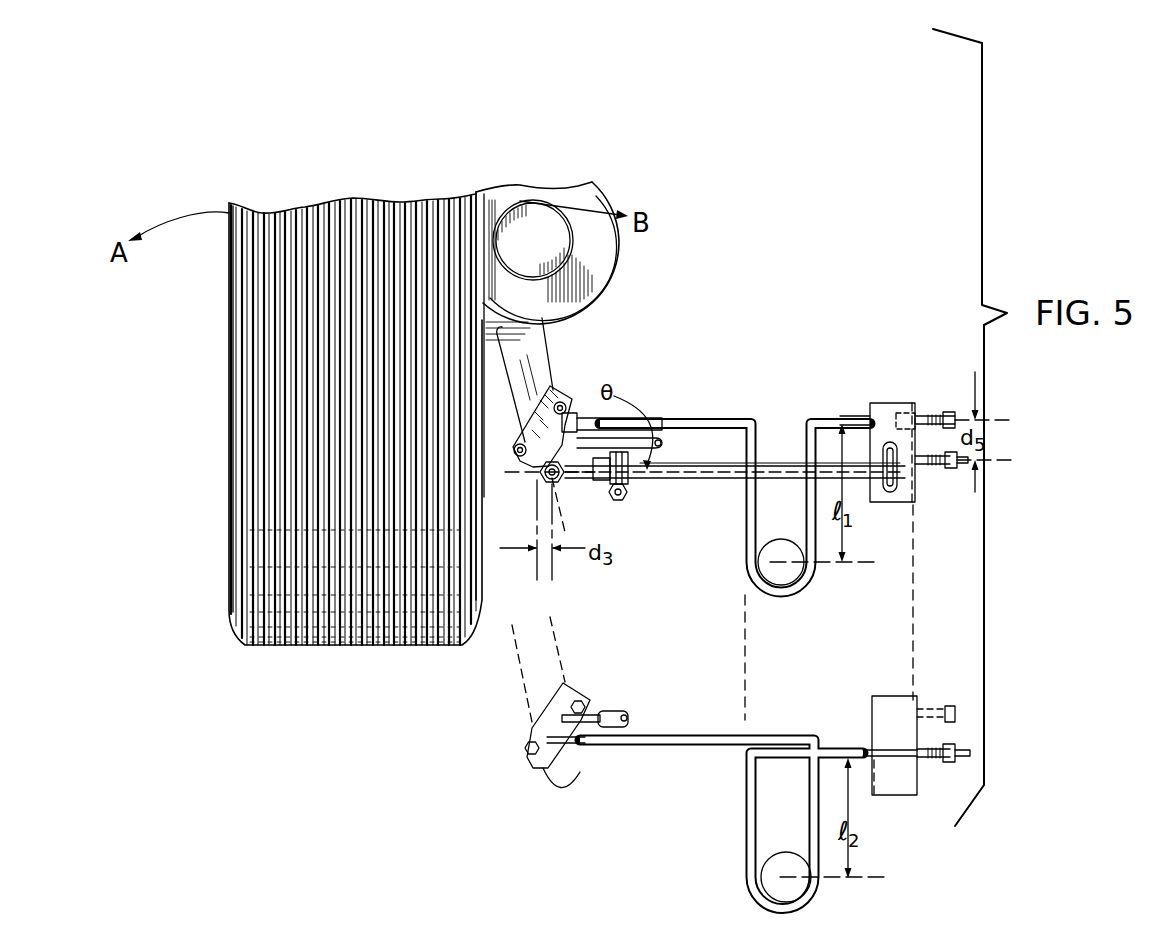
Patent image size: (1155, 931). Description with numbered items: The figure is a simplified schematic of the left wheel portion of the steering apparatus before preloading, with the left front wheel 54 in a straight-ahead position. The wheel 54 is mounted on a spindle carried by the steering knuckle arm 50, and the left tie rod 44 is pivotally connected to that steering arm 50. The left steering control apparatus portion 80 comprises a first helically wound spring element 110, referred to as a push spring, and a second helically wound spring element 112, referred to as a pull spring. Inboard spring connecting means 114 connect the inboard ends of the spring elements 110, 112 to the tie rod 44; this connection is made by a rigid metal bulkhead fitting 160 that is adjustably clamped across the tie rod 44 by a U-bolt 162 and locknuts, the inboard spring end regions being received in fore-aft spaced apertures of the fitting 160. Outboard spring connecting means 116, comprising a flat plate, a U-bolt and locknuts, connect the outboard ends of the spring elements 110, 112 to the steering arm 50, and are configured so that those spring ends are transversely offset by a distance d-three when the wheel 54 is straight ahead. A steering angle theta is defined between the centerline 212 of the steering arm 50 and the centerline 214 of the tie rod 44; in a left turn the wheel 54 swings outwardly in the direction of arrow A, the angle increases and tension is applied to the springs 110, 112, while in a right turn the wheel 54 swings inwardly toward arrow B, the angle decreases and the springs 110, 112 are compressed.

The left front wheel 54 is at (229, 289).
The steering knuckle arm 50 is at (543, 348).
The centerline of steering arm 212 is at (556, 375).
The outboard spring connecting means 116 is at (578, 393).
The first helically wound spring element 110 is at (660, 420).
The second helically wound spring element 112 is at (655, 478).
The centerline of tie rod 214 is at (680, 463).
The left tie rod 44 is at (735, 477).
The bulkhead fitting 160 is at (881, 403).
The U-bolt 162 is at (890, 492).
The inboard spring connecting means 114 is at (938, 494).
The left steering control apparatus portion 80 is at (818, 320).